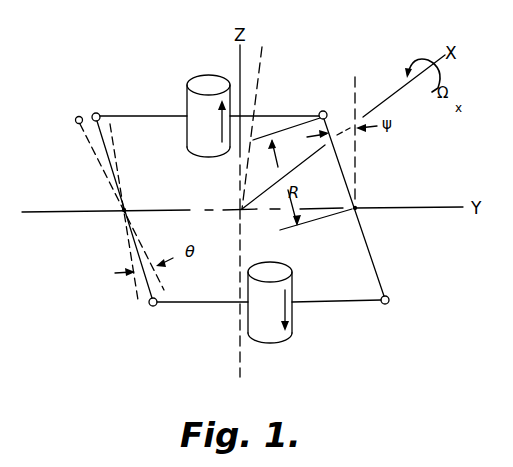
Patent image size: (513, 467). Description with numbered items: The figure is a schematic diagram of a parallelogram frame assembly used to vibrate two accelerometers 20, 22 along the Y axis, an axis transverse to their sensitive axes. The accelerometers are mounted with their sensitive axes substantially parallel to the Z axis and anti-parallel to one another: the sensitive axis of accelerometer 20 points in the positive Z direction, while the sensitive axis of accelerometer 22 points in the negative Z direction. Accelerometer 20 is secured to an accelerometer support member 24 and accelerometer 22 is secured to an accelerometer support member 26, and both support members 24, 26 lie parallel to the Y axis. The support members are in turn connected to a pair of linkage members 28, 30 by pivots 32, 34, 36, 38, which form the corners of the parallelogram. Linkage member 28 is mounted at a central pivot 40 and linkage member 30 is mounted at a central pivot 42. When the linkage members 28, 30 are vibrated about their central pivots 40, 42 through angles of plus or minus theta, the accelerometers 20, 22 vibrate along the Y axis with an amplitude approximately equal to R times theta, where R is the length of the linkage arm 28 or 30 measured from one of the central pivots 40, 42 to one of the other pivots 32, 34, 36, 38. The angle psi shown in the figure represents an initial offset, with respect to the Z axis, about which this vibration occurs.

The accelerometer 20 is at (200, 80).
The accelerometer 22 is at (280, 340).
The accelerometer support member 24 is at (152, 108).
The accelerometer support member 26 is at (338, 303).
The linkage member 28 is at (106, 163).
The linkage member 30 is at (373, 256).
The pivot 32 is at (98, 112).
The pivot 34 is at (324, 110).
The pivot 36 is at (155, 308).
The pivot 38 is at (390, 299).
The central pivot 40 is at (122, 216).
The central pivot 42 is at (362, 203).